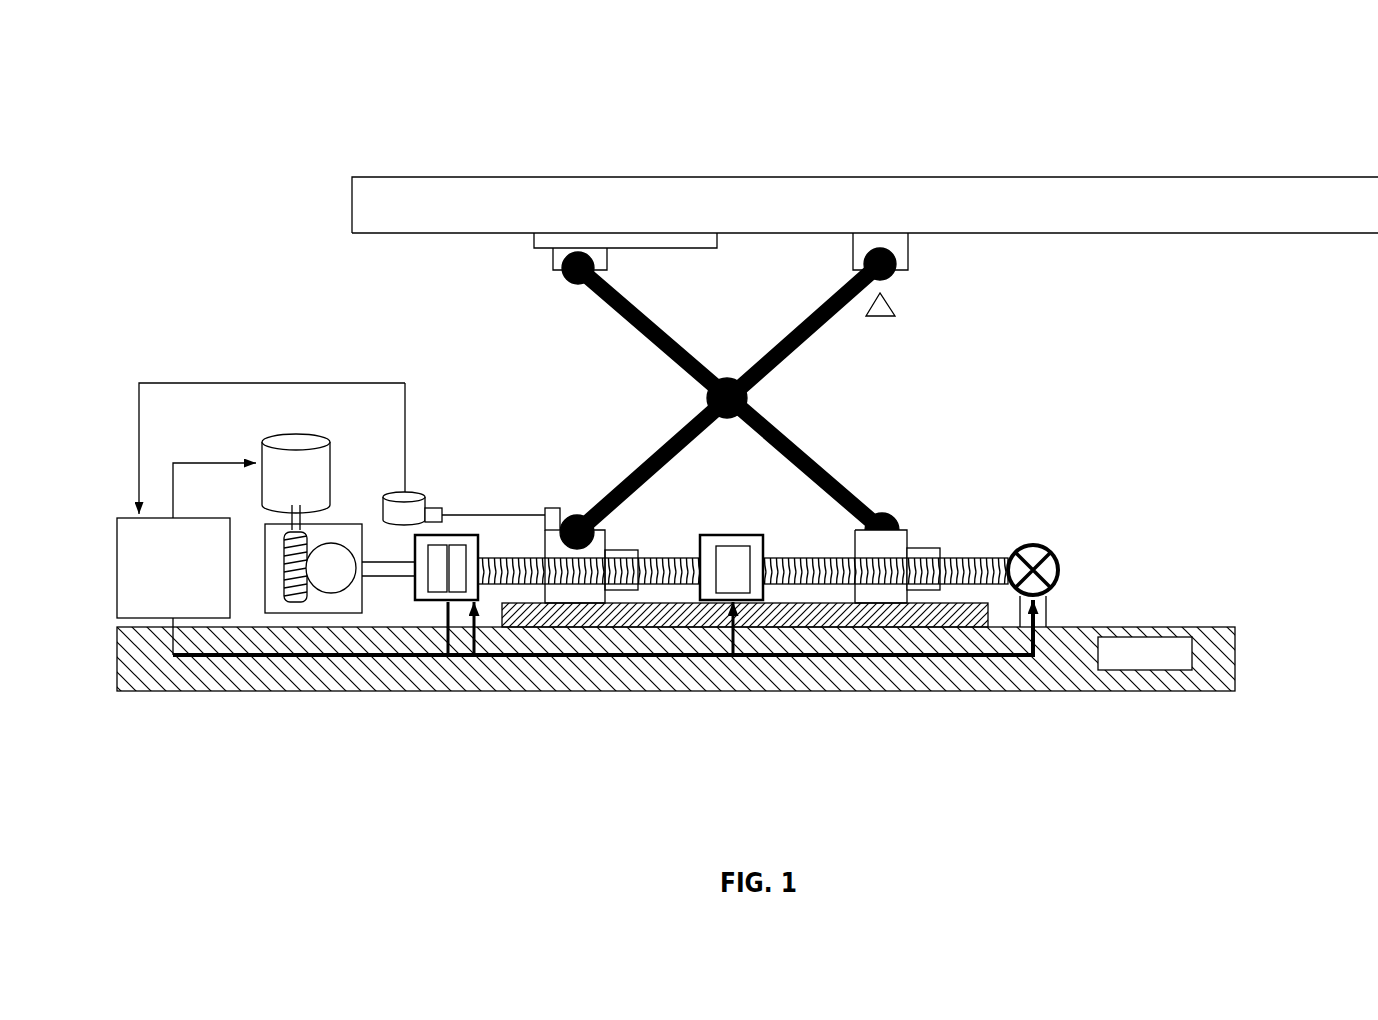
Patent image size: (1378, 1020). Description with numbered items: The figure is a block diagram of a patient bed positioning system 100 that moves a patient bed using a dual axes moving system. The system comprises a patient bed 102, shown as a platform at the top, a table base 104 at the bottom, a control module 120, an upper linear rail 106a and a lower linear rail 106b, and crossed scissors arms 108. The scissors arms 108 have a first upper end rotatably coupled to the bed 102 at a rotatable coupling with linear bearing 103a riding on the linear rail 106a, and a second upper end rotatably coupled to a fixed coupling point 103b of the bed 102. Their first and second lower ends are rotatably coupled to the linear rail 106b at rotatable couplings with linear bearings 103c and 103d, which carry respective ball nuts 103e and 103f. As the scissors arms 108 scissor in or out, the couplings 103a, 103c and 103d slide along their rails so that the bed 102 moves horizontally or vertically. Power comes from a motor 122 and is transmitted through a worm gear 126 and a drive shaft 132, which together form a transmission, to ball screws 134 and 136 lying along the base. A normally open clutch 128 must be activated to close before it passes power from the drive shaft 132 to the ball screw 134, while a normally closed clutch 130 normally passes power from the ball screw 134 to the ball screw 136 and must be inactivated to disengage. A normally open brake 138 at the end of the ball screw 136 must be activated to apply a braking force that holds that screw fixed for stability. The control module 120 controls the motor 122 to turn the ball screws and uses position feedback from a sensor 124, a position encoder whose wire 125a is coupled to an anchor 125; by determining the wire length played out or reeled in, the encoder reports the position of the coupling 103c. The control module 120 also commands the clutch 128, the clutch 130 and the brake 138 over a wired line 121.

The patient bed positioning system 100 is at (391, 77).
The patient bed 102 is at (1121, 217).
The table base 104 is at (1164, 667).
The linear rail 106a is at (660, 240).
The linear rail 106b is at (958, 619).
The rotatable coupling with linear bearing 103a is at (543, 264).
The fixed coupling point 103b is at (914, 268).
The rotatable coupling with linear bearing 103c is at (602, 526).
The rotatable coupling with linear bearing 103d is at (846, 525).
The ball nut 103e is at (622, 592).
The ball nut 103f is at (925, 592).
The scissors arms 108 is at (729, 398).
The control module 120 is at (192, 583).
The wired line 121 is at (202, 658).
The motor 122 is at (251, 465).
The sensor 124 is at (424, 454).
The anchor 125 is at (556, 503).
The wire 125a is at (497, 505).
The worm gear 126 is at (314, 615).
The normally open clutch 128 is at (477, 602).
The normally closed clutch 130 is at (698, 602).
The drive shaft 132 is at (399, 578).
The ball screw 134 is at (577, 585).
The ball screw 136 is at (840, 585).
The normally open brake 138 is at (1037, 567).